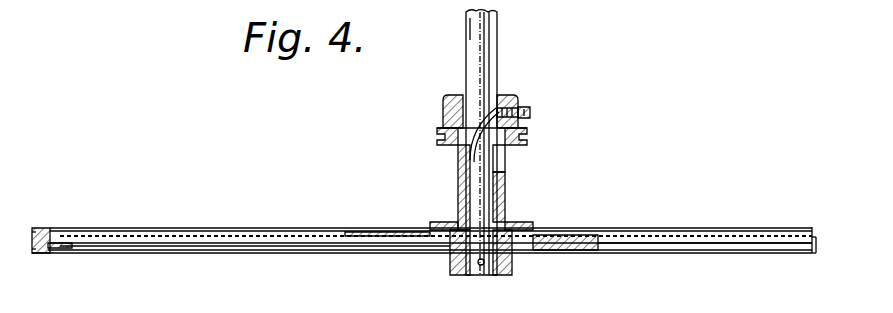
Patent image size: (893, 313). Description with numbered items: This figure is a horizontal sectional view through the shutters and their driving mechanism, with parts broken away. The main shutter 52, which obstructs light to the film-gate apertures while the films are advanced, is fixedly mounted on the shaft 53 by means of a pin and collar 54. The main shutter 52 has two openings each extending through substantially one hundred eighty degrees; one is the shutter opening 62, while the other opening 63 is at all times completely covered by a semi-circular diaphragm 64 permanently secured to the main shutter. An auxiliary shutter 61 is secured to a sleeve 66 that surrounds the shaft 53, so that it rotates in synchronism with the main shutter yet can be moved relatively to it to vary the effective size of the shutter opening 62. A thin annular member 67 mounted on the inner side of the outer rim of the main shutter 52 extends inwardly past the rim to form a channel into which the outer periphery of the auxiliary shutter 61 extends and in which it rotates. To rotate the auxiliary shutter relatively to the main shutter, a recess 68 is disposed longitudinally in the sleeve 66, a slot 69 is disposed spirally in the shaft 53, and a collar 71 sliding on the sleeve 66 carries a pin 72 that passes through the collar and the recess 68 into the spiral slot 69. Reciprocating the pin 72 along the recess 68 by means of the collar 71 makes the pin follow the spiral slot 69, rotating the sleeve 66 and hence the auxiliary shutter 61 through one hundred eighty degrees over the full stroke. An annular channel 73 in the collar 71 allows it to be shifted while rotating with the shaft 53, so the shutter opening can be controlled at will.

The main shutter 52 is at (372, 240).
The shaft 53 is at (488, 50).
The pin and collar 54 is at (482, 265).
The auxiliary shutter 61 is at (270, 228).
The shutter opening 62 is at (716, 240).
The opening 63 is at (70, 246).
The semi-circular diaphragm 64 is at (218, 246).
The sleeve 66 is at (507, 193).
The thin annular member 67 is at (53, 228).
The recess 68 is at (498, 160).
The slot 69 is at (462, 148).
The collar 71 is at (520, 98).
The pin 72 is at (531, 112).
The annular channel 73 is at (522, 136).